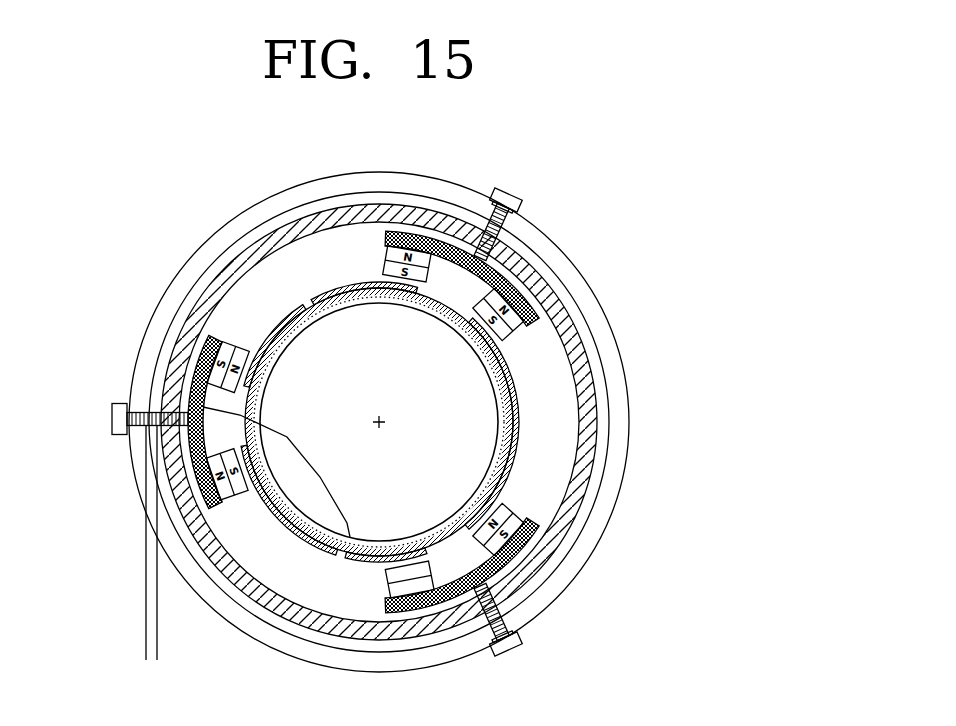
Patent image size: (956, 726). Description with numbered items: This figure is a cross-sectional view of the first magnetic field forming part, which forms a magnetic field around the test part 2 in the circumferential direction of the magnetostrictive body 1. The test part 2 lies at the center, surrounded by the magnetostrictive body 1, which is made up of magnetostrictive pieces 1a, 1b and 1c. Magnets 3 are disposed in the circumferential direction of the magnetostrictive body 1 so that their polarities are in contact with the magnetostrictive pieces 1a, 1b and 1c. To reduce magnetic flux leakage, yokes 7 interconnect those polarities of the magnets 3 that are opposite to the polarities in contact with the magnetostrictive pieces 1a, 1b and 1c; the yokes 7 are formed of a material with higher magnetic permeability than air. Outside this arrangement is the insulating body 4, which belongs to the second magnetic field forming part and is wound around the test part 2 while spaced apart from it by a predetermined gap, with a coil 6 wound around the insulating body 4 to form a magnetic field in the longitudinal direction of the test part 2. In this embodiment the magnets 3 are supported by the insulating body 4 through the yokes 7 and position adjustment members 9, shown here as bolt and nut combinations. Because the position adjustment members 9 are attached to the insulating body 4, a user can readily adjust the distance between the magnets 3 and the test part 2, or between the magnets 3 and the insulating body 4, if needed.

The magnetostrictive body 1 is at (72, 263).
The magnetostrictive piece 1a is at (475, 337).
The magnetostrictive piece 1b is at (277, 348).
The magnetostrictive piece 1c is at (187, 417).
The test part 2 is at (482, 396).
The magnet 3 is at (425, 603).
The insulating body 4 is at (513, 238).
The coil 6 is at (470, 197).
The yoke 7 is at (533, 574).
The position adjustment member 9 is at (508, 650).